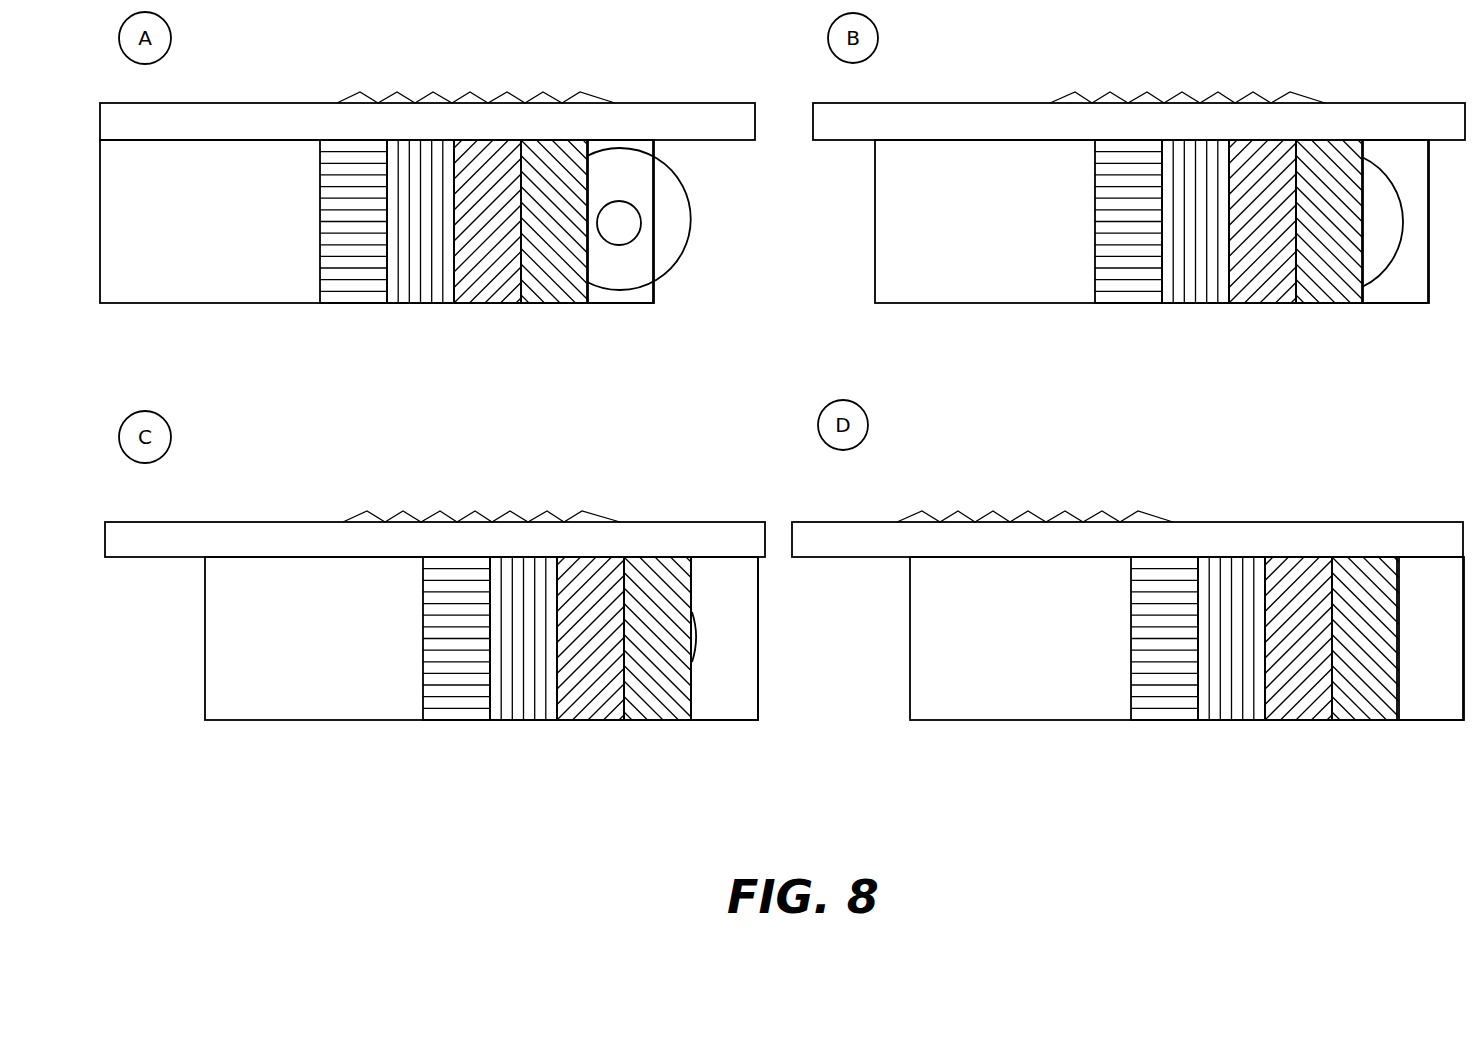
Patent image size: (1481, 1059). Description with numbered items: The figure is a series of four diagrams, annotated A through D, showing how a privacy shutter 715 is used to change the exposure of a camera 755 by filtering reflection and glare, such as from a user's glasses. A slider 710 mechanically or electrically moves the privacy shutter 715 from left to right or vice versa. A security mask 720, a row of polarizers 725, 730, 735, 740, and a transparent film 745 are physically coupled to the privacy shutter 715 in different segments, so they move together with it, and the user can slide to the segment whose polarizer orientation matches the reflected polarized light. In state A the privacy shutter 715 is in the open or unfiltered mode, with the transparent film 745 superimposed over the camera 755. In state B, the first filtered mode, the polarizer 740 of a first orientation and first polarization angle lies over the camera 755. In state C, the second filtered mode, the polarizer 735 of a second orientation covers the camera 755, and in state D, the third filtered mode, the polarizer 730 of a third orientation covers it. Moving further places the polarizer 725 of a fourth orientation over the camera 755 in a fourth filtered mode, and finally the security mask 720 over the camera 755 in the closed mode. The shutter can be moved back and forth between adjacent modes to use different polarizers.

The slider 710 is at (591, 104).
The privacy shutter 715 is at (190, 103).
The security mask 720 is at (155, 304).
The polarizer 725 is at (329, 304).
The polarizer 730 is at (404, 304).
The polarizer 735 is at (470, 304).
The polarizer 740 is at (545, 304).
The transparent film 745 is at (634, 304).
The camera 755 is at (684, 250).